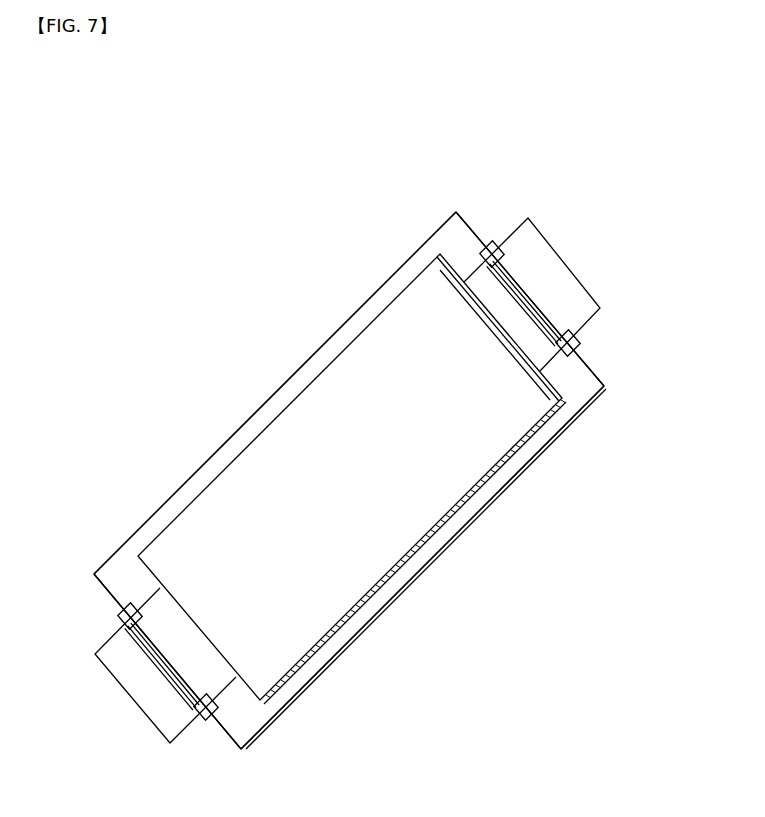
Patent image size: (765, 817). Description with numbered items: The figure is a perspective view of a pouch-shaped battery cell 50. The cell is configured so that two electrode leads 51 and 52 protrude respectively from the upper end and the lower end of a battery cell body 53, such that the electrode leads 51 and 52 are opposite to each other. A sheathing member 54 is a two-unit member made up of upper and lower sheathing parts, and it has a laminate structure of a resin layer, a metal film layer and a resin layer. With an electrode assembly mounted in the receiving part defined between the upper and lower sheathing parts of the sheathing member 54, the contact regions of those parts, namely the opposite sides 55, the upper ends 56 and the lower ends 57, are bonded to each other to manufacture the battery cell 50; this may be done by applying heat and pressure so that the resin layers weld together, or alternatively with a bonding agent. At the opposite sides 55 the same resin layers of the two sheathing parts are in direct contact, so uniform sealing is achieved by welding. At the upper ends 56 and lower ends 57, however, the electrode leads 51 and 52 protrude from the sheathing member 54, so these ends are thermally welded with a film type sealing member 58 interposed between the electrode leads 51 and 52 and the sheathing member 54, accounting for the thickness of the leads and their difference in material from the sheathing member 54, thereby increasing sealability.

The pouch-shaped battery cell 50 is at (80, 191).
The electrode lead 51 is at (150, 698).
The electrode lead 52 is at (570, 263).
The battery cell body 53 is at (300, 425).
The sheathing member 54 is at (444, 222).
The opposite sides 55 is at (445, 555).
The upper ends 56 is at (122, 570).
The lower ends 57 is at (602, 384).
The film type sealing member 58 is at (497, 243).